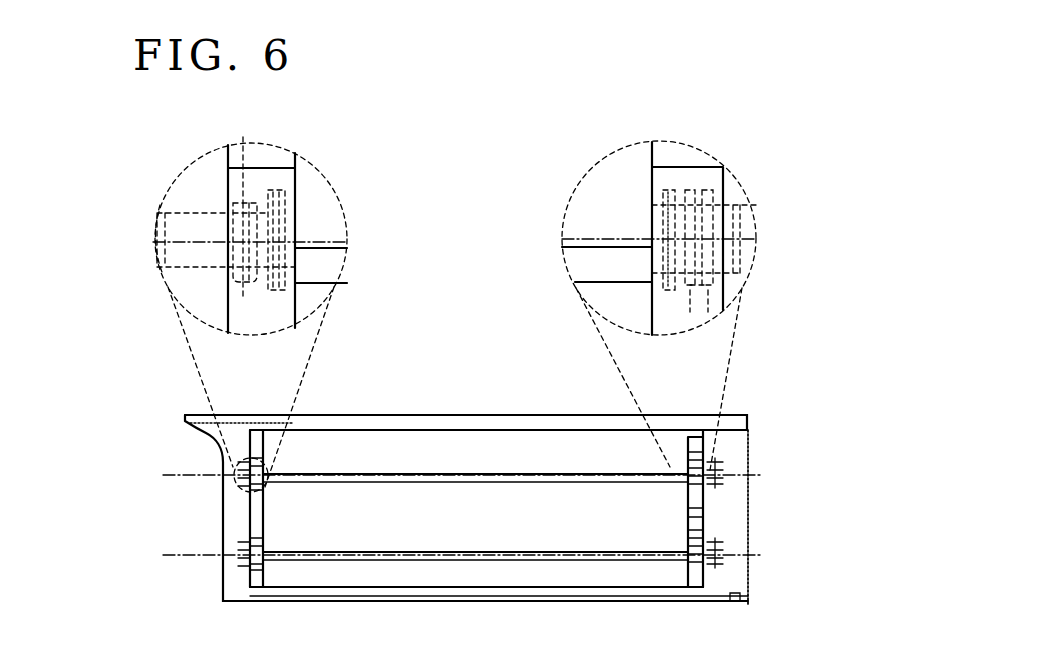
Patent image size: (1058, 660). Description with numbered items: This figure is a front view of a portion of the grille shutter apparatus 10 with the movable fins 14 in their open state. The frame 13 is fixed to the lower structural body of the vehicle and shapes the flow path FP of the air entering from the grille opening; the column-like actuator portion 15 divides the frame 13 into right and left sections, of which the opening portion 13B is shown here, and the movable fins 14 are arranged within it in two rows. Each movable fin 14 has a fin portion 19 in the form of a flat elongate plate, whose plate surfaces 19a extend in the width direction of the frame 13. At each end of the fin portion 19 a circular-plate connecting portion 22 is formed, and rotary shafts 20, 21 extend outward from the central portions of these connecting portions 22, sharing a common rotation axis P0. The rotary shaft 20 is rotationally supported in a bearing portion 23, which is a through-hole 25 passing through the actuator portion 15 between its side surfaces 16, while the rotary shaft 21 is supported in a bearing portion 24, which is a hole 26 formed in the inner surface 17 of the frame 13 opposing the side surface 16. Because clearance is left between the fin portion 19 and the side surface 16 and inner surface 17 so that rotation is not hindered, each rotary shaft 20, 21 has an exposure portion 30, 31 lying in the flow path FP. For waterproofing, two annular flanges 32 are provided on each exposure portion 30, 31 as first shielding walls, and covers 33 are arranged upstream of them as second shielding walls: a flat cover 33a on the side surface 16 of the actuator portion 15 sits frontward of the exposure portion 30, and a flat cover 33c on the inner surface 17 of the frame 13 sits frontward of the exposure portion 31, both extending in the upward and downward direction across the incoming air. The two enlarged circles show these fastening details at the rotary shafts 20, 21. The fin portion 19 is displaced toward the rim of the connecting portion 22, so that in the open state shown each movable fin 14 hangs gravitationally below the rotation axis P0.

The grille shutter apparatus 10 is at (182, 395).
The frame 13 is at (733, 413).
The opening portion 13B is at (478, 436).
The movable fin 14 is at (476, 417).
The actuator portion 15 is at (731, 574).
The side surface 16 is at (697, 588).
The inner surface 17 is at (250, 600).
The fin portion 19 is at (476, 417).
The frame plate 19a is at (537, 474).
The rotary shaft 20 is at (735, 283).
The rotary shaft 21 is at (234, 206).
The connecting portion 22 is at (287, 200).
The bearing portion 23 is at (752, 237).
The bearing portion 24 is at (140, 230).
The through-hole 25 is at (728, 210).
The hole 26 is at (172, 213).
The exposure portion 30 is at (700, 168).
The exposure portion 31 is at (239, 159).
The flange 32 is at (247, 288).
The cover 33 is at (475, 332).
The cover 33a is at (668, 176).
The cover 33c is at (274, 177).
The rotation axis P0 is at (752, 470).
The flow path FP is at (502, 532).